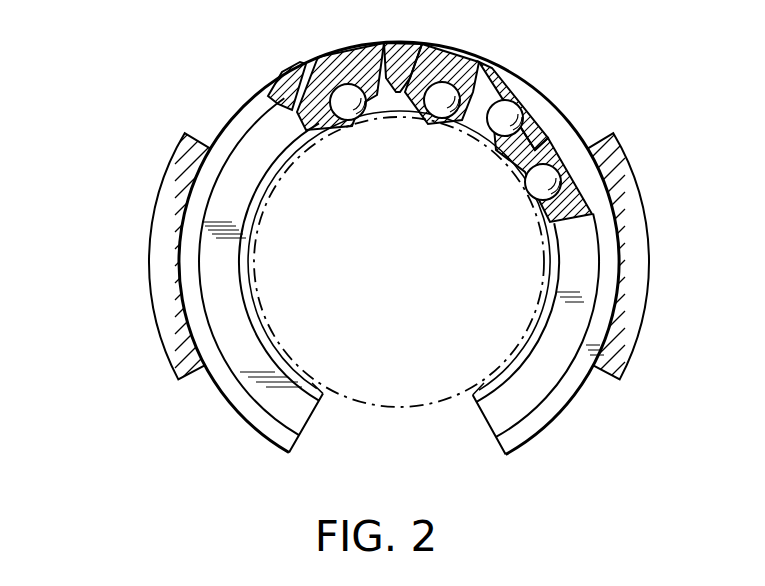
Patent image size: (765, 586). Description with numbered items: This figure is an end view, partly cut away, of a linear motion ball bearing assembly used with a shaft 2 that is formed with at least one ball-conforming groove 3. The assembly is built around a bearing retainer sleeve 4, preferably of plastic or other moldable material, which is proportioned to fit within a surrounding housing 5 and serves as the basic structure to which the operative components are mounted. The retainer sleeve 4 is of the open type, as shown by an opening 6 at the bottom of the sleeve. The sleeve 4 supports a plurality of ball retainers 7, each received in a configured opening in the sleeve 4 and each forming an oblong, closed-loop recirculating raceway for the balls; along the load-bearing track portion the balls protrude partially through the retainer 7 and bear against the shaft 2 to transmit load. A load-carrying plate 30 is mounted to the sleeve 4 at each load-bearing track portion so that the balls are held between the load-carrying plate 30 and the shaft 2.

The shaft 2 is at (406, 408).
The ball-conforming groove 3 is at (347, 124).
The bearing retainer sleeve 4 is at (296, 78).
The housing 5 is at (157, 209).
The opening 6 is at (378, 440).
The ball retainer 7 is at (322, 132).
The load-carrying plate 30 is at (347, 62).